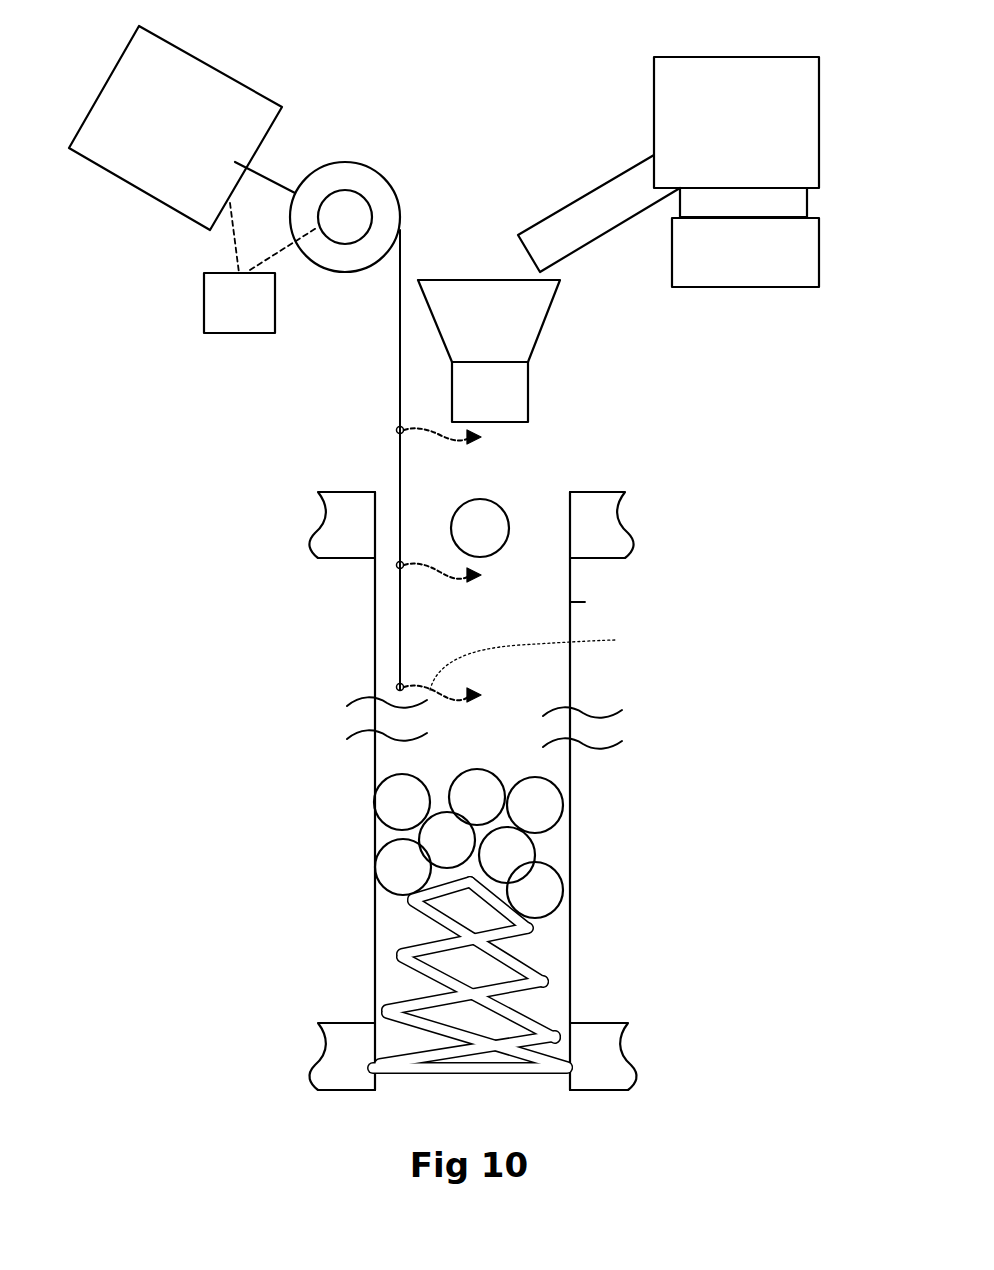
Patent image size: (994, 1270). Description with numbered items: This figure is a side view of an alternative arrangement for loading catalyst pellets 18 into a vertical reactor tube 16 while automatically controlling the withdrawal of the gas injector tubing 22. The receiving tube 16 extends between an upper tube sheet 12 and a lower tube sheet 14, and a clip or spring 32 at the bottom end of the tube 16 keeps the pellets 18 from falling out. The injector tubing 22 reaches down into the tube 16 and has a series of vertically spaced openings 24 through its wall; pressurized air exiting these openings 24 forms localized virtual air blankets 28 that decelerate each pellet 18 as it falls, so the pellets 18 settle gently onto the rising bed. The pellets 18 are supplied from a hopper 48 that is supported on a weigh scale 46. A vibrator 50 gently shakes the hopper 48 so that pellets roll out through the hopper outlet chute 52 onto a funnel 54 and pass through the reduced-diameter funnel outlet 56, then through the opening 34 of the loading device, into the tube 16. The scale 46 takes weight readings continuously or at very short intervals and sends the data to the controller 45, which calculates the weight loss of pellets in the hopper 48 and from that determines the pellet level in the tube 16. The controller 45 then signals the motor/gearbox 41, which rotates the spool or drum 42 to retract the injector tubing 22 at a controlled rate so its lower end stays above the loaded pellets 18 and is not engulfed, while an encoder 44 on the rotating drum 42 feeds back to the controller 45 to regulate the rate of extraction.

The upper tube sheet 12 is at (612, 543).
The lower tube sheet 14 is at (350, 1032).
The reactor tube 16 is at (585, 602).
The catalyst pellets 18 is at (498, 500).
The gas injector tubing 22 is at (400, 345).
The openings 24 is at (400, 430).
The virtual air blankets 28 is at (545, 657).
The clip or spring 32 is at (410, 955).
The opening 34 is at (570, 520).
The motor/gearbox 41 is at (150, 197).
The spool or drum 42 is at (360, 163).
The encoder 44 is at (365, 197).
The controller 45 is at (261, 268).
The weigh scale 46 is at (672, 257).
The hopper 48 is at (654, 75).
The vibrator 50 is at (807, 203).
The hopper outlet chute 52 is at (612, 177).
The funnel 54 is at (545, 320).
The funnel outlet 56 is at (528, 392).